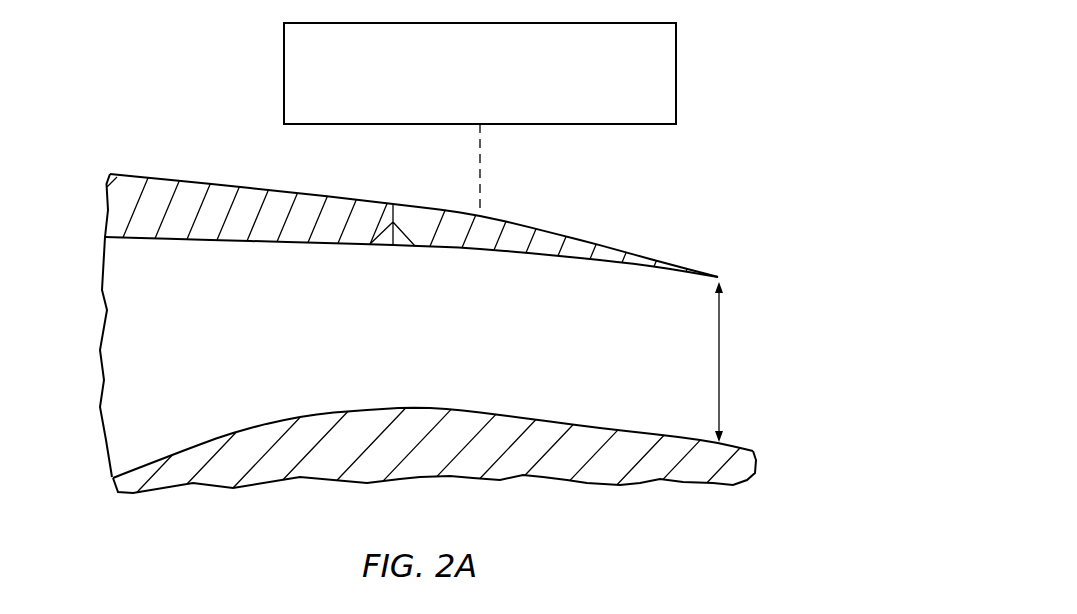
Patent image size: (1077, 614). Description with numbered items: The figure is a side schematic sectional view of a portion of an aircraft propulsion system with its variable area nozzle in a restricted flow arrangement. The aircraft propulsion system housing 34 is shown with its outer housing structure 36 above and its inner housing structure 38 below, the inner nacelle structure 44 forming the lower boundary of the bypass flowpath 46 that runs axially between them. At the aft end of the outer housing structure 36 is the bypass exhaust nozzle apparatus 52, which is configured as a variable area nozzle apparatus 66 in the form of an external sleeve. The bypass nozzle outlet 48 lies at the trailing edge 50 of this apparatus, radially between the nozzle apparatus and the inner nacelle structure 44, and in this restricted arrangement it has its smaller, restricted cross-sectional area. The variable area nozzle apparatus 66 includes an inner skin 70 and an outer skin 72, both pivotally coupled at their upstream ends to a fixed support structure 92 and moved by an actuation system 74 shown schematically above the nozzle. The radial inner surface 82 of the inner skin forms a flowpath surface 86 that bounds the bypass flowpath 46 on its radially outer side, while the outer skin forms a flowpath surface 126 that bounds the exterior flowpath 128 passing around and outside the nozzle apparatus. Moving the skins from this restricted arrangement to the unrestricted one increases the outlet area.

The aircraft propulsion system housing 34 is at (67, 61).
The outer housing structure 36 is at (91, 166).
The inner housing structure 38 is at (102, 497).
The inner nacelle structure 44 is at (437, 413).
The bypass flowpath 46 is at (180, 345).
The bypass nozzle outlet 48 is at (743, 360).
The trailing edge 50 is at (718, 277).
The bypass exhaust nozzle apparatus 52 is at (631, 234).
The variable area nozzle apparatus 66 is at (659, 261).
The inner skin 70 is at (470, 252).
The outer skin 72 is at (455, 210).
The actuation system 74 is at (676, 63).
The radial inner surface 82 is at (533, 257).
The flowpath surface 86 is at (532, 253).
The support structure 92 is at (373, 265).
The flowpath surface 126 is at (550, 230).
The exterior flowpath 128 is at (652, 170).